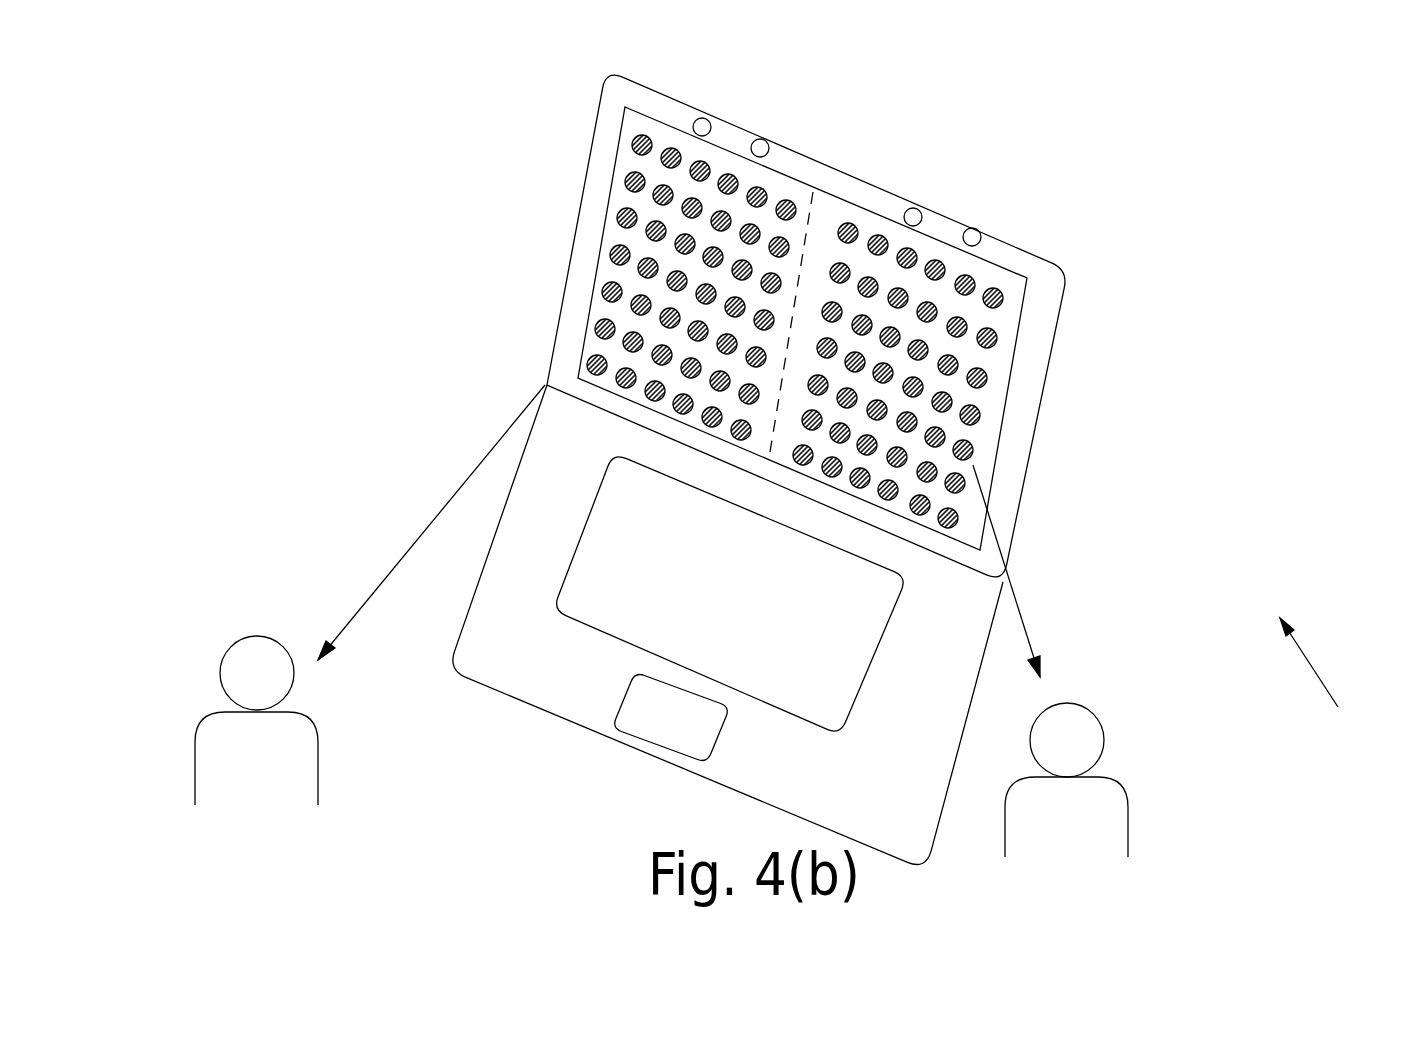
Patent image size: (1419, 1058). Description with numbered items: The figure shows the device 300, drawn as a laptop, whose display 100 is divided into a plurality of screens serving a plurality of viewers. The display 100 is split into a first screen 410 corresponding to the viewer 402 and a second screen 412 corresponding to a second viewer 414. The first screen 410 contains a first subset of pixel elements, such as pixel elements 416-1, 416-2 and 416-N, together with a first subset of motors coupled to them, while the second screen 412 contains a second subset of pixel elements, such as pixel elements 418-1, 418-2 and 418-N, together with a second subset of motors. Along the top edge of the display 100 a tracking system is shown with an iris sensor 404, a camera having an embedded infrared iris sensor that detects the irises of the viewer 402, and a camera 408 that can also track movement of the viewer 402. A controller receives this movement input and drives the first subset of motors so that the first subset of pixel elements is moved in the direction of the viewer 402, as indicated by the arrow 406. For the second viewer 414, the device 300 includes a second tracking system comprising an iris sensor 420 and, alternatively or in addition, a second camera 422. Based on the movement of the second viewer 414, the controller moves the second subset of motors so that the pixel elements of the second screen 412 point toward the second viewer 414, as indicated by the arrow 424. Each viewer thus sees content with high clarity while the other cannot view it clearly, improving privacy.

The display 100 is at (838, 469).
The device 300 is at (1338, 707).
The viewer 402 is at (203, 682).
The iris sensor 404 is at (759, 86).
The arrow 406 is at (431, 522).
The camera 408 is at (803, 121).
The first screen 410 is at (624, 294).
The second screen 412 is at (986, 381).
The second viewer 414 is at (1144, 780).
The pixel element 416-1 is at (541, 111).
The pixel element 416-2 is at (554, 174).
The pixel element 416-N is at (561, 575).
The pixel element 418-1 is at (938, 147).
The pixel element 418-2 is at (962, 168).
The pixel element 418-N is at (949, 528).
The iris sensor 420 is at (973, 173).
The second camera 422 is at (1029, 208).
The arrow 424 is at (1012, 571).